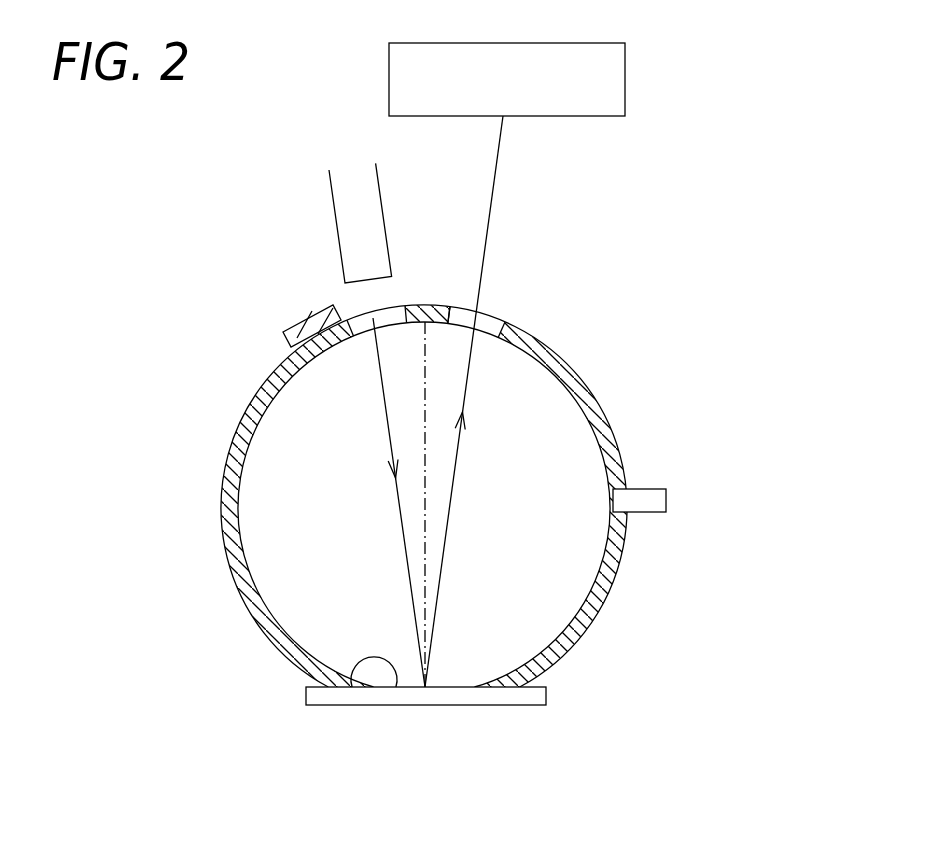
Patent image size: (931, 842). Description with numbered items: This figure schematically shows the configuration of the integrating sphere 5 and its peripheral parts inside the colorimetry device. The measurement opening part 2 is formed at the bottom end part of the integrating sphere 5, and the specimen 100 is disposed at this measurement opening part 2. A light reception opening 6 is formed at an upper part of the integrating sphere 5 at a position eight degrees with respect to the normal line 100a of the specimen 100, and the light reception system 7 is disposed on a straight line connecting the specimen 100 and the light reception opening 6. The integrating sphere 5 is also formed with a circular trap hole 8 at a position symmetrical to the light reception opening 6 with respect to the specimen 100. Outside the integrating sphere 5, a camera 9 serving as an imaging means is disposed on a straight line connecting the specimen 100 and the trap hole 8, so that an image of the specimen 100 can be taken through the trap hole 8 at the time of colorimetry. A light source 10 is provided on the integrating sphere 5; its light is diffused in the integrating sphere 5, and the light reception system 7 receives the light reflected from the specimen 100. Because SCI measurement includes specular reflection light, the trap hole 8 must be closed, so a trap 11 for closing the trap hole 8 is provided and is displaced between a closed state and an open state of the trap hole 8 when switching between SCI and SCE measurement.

The measurement opening part 2 is at (360, 660).
The integrating sphere 5 is at (600, 422).
The light reception opening 6 is at (492, 323).
The light reception system 7 is at (626, 68).
The trap hole 8 is at (383, 318).
The camera 9 is at (333, 211).
The light source 10 is at (667, 498).
The trap 11 is at (303, 330).
The specimen 100 is at (466, 692).
The normal line 100a is at (427, 500).